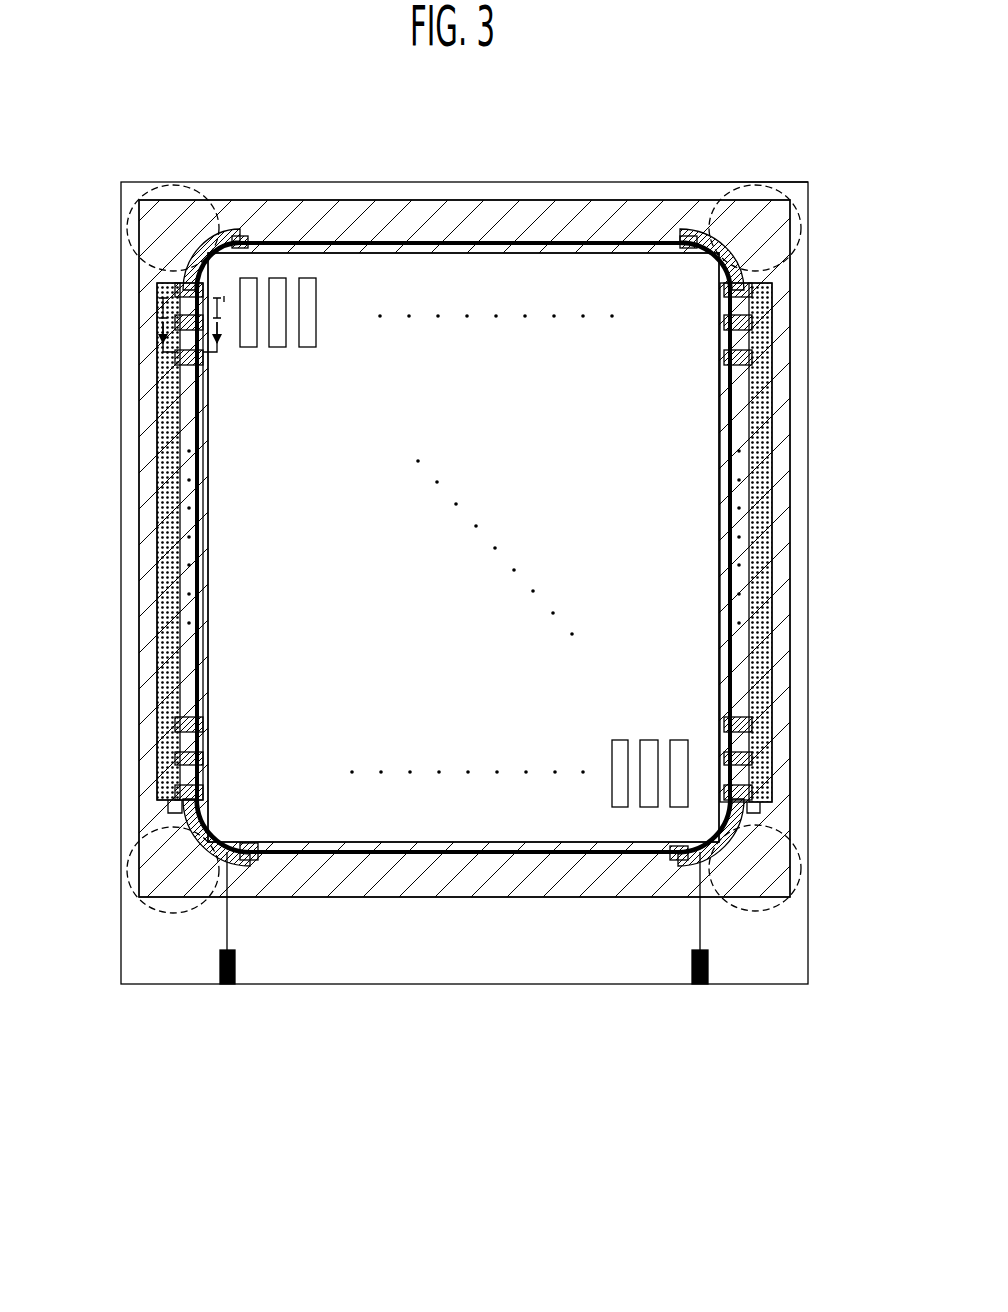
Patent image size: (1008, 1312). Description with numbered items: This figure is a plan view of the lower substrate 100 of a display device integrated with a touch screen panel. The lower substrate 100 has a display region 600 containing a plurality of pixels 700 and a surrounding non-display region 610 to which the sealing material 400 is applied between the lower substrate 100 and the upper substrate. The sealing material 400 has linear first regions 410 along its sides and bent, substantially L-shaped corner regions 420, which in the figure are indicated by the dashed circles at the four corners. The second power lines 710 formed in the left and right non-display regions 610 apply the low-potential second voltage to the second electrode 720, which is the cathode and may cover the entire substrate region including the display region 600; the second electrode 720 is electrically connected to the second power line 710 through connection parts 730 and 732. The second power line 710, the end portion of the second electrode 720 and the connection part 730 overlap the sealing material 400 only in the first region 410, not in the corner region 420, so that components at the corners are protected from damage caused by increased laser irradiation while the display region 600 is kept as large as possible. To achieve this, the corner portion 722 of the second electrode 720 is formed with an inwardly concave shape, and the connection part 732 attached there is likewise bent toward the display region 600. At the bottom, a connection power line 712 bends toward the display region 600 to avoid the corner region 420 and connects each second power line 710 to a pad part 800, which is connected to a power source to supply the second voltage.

The lower substrate 100 is at (602, 182).
The sealing material 400 is at (773, 1080).
The first region of the sealing material 410 is at (445, 213).
The corner region of the sealing material 420 is at (176, 214).
The display region 600 is at (352, 268).
The non-display region 610 is at (686, 180).
The pixel 700 is at (310, 278).
The second power line 710 is at (170, 595).
The connection power line 712 is at (230, 923).
The second electrode 720 is at (197, 553).
The concave corner portion of the second electrode 722 is at (213, 277).
The connection part 730 is at (175, 358).
The connection part 732 is at (185, 276).
The pad part 800 is at (237, 974).